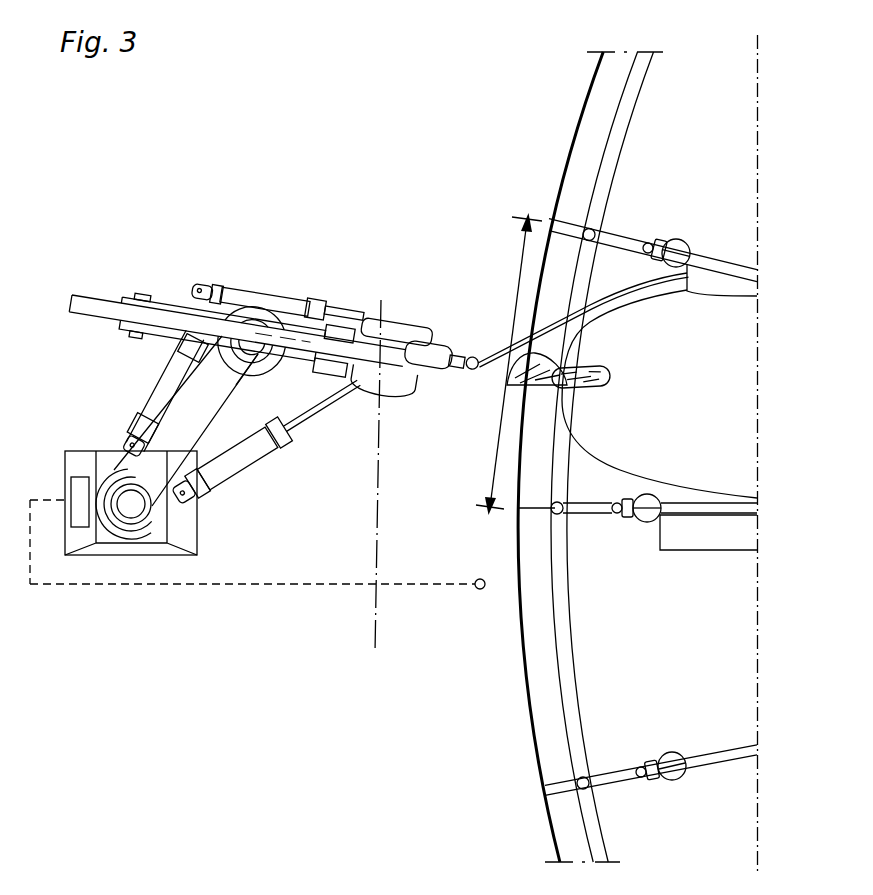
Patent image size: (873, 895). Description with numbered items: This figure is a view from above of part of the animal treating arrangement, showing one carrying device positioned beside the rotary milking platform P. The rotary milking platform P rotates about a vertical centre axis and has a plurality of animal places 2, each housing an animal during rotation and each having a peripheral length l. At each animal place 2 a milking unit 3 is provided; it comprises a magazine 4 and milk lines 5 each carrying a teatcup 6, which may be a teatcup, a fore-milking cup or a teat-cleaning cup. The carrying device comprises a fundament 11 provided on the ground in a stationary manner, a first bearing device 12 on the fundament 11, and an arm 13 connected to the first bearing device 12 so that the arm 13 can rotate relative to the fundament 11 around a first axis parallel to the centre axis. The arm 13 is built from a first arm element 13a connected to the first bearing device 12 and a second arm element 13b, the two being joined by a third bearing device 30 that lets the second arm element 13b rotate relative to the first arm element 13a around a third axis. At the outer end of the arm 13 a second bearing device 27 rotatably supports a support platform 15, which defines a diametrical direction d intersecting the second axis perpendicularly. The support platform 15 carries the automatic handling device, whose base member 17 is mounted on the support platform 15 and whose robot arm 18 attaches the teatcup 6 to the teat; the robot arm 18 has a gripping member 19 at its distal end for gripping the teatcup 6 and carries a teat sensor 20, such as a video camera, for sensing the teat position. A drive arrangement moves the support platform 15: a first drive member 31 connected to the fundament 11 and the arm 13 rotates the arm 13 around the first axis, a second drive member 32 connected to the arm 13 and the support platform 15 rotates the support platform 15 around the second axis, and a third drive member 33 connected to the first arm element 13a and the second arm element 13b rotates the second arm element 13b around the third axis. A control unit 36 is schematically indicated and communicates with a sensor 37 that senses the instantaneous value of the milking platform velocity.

The animal place 2 is at (704, 170).
The milking unit 3 is at (727, 272).
The magazine 4 is at (742, 285).
The milk line 5 is at (614, 290).
The teatcup 6 is at (480, 372).
The fundament 11 is at (95, 548).
The first bearing device 12 is at (131, 528).
The arm 13 is at (178, 487).
The first arm element 13a is at (190, 418).
The second arm element 13b is at (260, 387).
The support platform 15 is at (408, 305).
The base member 17 is at (413, 396).
The robot arm 18 is at (110, 298).
The gripping member 19 is at (472, 356).
The teat sensor 20 is at (437, 340).
The second bearing device 27 is at (368, 398).
The third bearing device 30 is at (248, 304).
The first drive member 31 is at (175, 378).
The second drive member 32 is at (287, 290).
The third drive member 33 is at (258, 447).
The control unit 36 is at (80, 478).
The sensor 37 is at (480, 579).
The rotary milking platform P is at (600, 96).
The peripheral length I is at (519, 290).
The diametrical direction d is at (462, 372).